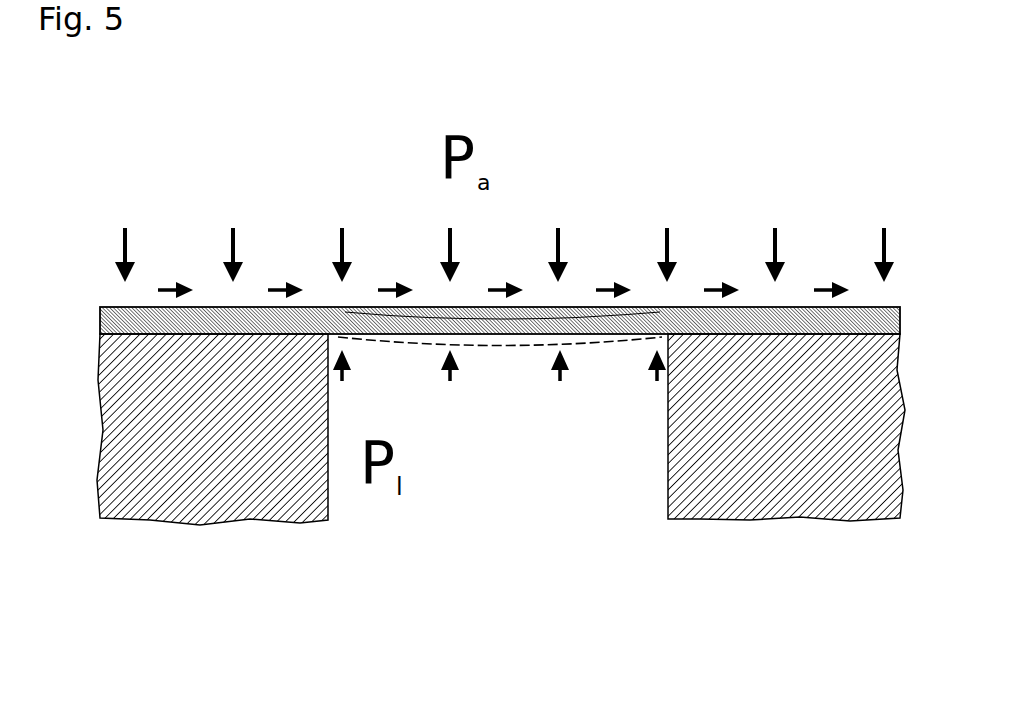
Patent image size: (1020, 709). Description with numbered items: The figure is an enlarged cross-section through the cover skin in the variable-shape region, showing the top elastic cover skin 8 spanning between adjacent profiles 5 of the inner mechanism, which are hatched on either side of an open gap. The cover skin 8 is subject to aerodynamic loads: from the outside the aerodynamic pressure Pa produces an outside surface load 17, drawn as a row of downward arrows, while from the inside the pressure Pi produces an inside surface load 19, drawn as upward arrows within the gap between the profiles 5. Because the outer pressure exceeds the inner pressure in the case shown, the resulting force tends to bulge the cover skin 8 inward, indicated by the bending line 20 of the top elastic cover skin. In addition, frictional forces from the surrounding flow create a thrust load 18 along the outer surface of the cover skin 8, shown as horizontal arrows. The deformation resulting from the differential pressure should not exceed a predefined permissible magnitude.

The profile 5 is at (783, 492).
The top elastic cover skin 8 is at (105, 310).
The outside surface load 17 is at (686, 219).
The thrust load 18 is at (836, 270).
The inside surface load 19 is at (455, 374).
The bending line of the top elastic cover skin 20 is at (522, 355).